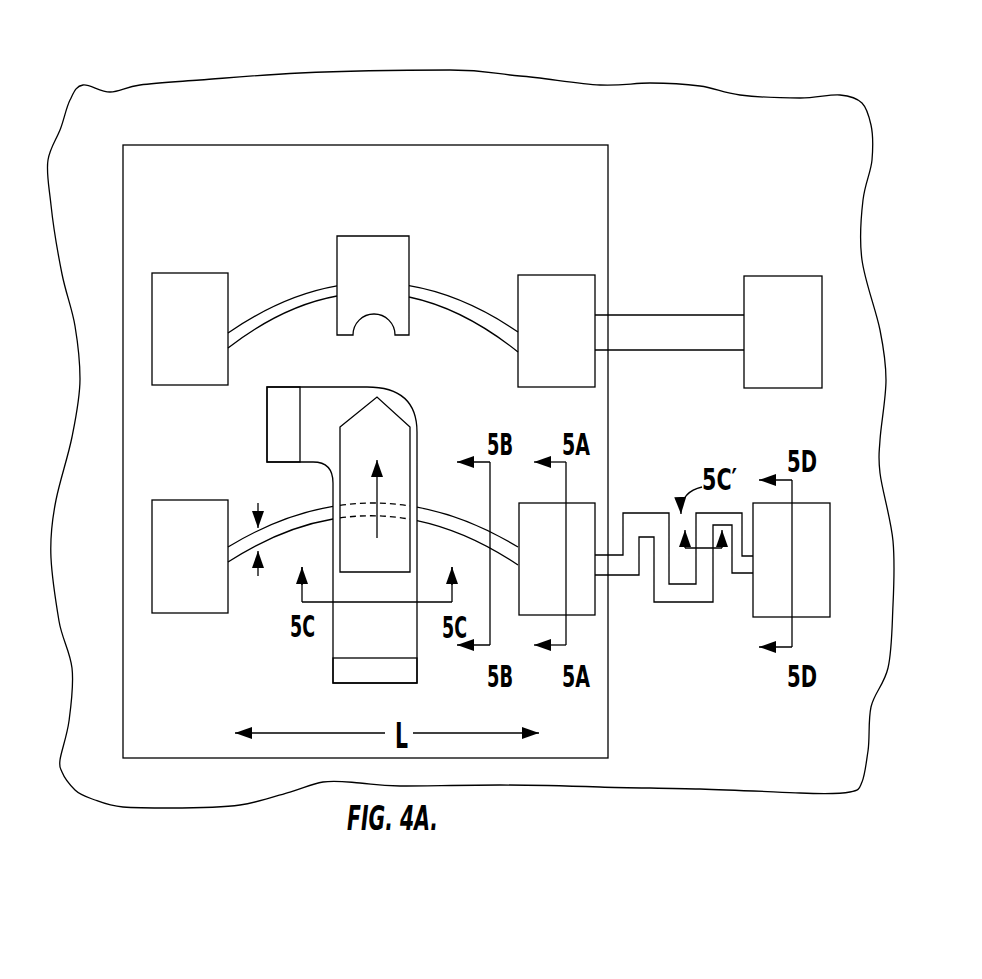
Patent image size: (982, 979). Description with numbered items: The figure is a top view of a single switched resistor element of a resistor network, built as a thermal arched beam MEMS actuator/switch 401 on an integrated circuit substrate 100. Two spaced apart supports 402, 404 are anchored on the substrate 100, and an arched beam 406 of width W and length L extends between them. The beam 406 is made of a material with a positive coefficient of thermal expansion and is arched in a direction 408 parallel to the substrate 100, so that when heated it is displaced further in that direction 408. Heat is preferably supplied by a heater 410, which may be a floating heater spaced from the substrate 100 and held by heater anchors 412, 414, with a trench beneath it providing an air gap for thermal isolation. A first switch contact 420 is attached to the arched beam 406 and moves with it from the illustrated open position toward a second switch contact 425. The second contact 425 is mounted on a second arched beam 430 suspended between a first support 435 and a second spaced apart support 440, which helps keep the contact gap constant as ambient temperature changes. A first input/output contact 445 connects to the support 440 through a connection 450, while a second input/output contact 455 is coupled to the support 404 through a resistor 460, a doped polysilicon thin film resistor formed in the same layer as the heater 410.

The integrated circuit substrate 100 is at (731, 142).
The thermal arched beam MEMS actuator/switch 401 is at (302, 160).
The spaced apart support 402 is at (187, 585).
The spaced apart support 404 is at (592, 598).
The arched beam 406 is at (295, 517).
The direction 408 is at (380, 485).
The heater 410 is at (318, 405).
The heater anchor 412 is at (283, 427).
The heater anchor 414 is at (383, 677).
The first switch contact 420 is at (380, 432).
The second switch contact 425 is at (380, 257).
The arched beam 430 is at (263, 318).
The first support 435 is at (183, 287).
The second spaced apart support 440 is at (549, 290).
The first input/output contact 445 is at (770, 292).
The connection 450 is at (644, 330).
The second input/output contact 455 is at (803, 597).
The resistor 460 is at (688, 595).